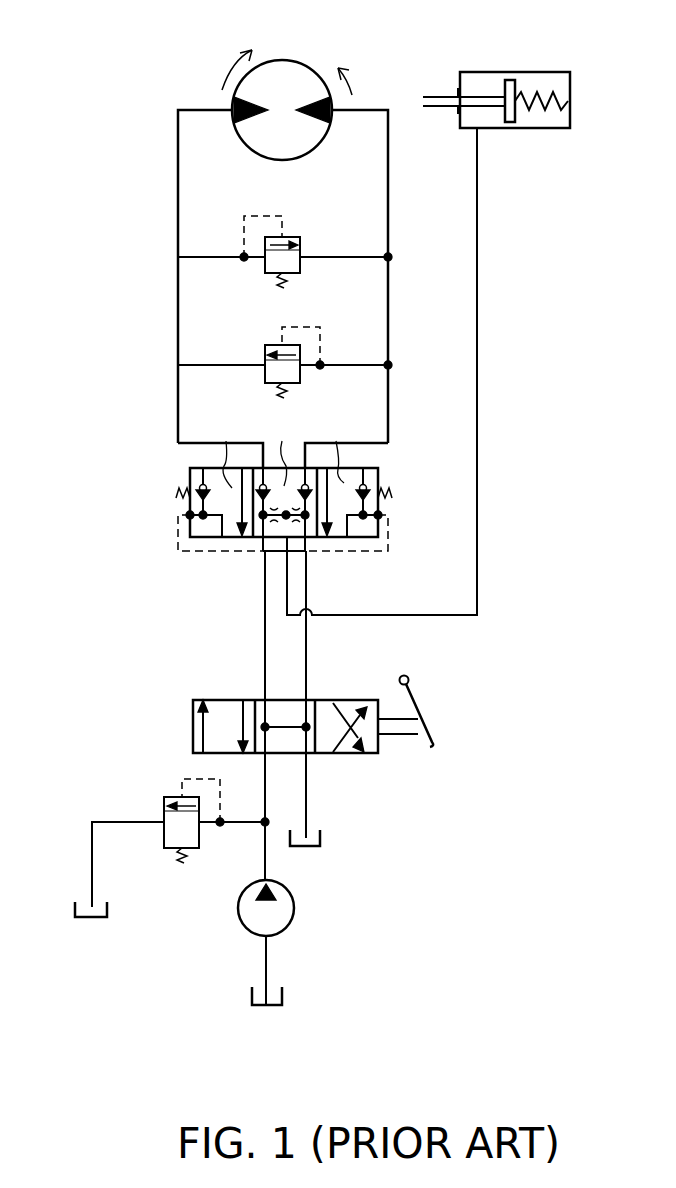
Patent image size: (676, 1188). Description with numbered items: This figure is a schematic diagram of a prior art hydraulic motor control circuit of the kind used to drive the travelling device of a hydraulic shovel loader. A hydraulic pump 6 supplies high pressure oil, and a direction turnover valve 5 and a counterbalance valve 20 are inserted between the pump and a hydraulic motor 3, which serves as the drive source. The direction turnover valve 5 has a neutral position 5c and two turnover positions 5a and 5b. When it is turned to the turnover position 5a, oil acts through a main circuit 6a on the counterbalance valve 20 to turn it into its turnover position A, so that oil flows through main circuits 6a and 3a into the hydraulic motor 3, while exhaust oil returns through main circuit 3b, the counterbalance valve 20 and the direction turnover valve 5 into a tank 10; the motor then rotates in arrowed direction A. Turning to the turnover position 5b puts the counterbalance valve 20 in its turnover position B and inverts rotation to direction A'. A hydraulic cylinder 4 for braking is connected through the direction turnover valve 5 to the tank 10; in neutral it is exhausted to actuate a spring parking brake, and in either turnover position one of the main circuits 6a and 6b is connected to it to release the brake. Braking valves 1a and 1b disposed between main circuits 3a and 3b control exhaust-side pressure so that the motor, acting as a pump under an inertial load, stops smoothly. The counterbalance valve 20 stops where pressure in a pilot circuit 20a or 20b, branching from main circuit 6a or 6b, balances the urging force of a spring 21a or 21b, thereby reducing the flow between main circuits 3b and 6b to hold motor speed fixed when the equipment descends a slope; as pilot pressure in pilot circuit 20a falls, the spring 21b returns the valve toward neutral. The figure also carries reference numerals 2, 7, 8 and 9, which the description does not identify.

The braking valve 1a is at (265, 275).
The braking valve 1b is at (257, 377).
The pilot line 2 is at (287, 583).
The hydraulic motor 3 is at (302, 62).
The main circuit 3a is at (178, 140).
The main circuit 3b is at (388, 172).
The hydraulic cylinder 4 is at (526, 72).
The direction turnover valve 5 is at (313, 731).
The turnover position 5a is at (226, 700).
The turnover position 5b is at (343, 700).
The neutral position 5c is at (284, 700).
The hydraulic pump 6 is at (295, 912).
The main circuit 6a is at (265, 627).
The main circuit 6b is at (306, 637).
The tank 7 is at (285, 997).
The relief valve 8 is at (176, 797).
The tank 9 is at (75, 907).
The tank 10 is at (322, 838).
The counterbalance valve 20 is at (378, 468).
The pilot circuit 20a is at (178, 551).
The pilot circuit 20b is at (388, 551).
The spring 21a is at (176, 492).
The spring 21b is at (393, 490).